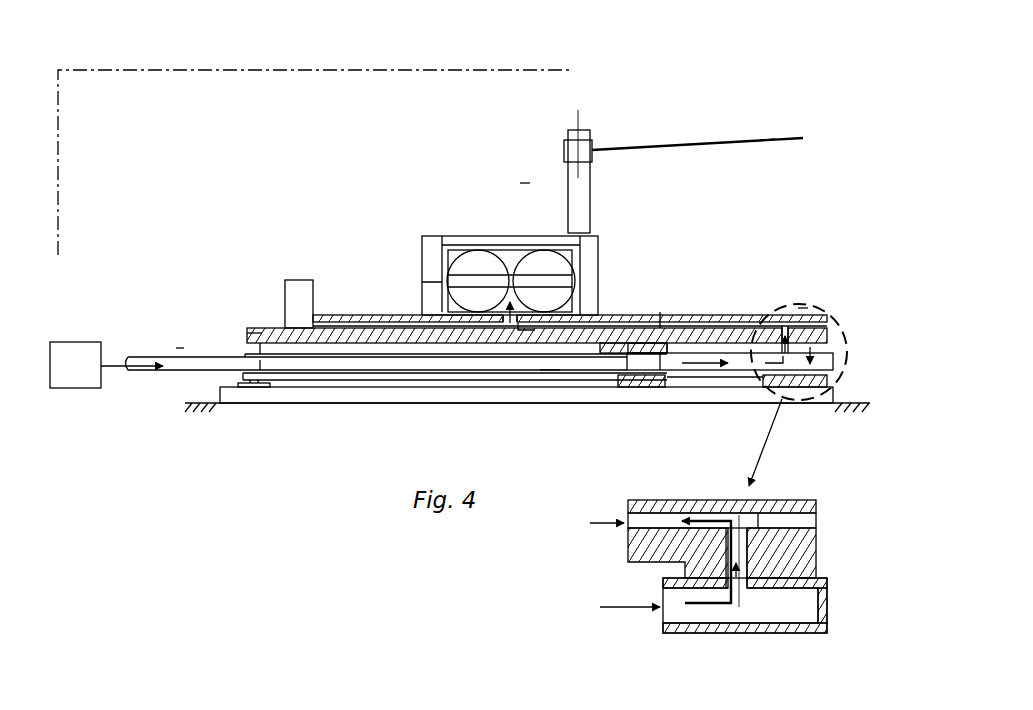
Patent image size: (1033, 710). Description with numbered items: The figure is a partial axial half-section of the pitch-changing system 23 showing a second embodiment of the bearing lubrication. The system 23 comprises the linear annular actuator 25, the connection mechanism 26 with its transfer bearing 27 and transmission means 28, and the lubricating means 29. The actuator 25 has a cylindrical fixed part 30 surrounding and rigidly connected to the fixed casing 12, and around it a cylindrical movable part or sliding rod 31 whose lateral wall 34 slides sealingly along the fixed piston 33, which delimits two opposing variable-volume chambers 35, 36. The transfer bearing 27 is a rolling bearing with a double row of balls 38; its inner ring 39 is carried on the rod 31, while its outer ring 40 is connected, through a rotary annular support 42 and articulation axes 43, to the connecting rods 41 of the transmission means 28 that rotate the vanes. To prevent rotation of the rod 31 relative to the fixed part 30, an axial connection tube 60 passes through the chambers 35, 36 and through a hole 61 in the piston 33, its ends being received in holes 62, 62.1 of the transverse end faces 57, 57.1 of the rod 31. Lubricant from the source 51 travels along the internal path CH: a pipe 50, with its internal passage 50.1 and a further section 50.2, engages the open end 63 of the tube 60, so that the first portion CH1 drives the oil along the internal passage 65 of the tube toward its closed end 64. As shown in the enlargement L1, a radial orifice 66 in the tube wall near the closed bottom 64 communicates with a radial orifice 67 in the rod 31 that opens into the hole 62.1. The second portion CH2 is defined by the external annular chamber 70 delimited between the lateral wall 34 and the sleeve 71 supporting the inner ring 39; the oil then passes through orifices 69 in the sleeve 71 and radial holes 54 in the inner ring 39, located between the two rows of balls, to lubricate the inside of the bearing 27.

The system for changing the pitch 23 is at (241, 67).
The fixed casing 12 is at (190, 416).
The cylindrical fixed part 30 is at (337, 404).
The rotary annular support 42 is at (591, 196).
The articulation axes 43 is at (583, 119).
The connecting rods 41 is at (700, 143).
The transmission means 28 is at (770, 136).
The connection mechanism 26 is at (523, 181).
The transfer bearing 27 is at (444, 233).
The outer ring 40 is at (432, 240).
The balls 38 is at (466, 263).
The inner ring 39 is at (442, 303).
The holes 54 is at (537, 286).
The orifices 69 is at (505, 341).
The cylindrical movable part 31 is at (348, 316).
The transverse end face 57 is at (247, 336).
The actuator 25 is at (271, 324).
The means for lubricating the bearing 29 is at (179, 345).
The lateral wall 34 is at (385, 346).
The piston 33 is at (625, 343).
The hole 61 is at (661, 312).
The lubricant supply source 51 is at (106, 365).
The pipes 50 is at (166, 373).
The open end of the tube 63 is at (211, 377).
The variable-volume chamber 35 is at (420, 381).
The hole 62 is at (253, 388).
The internal passage 50.1 is at (285, 361).
The connection tube 60 is at (535, 372).
The tube second section 50.2 is at (650, 362).
The variable-volume chamber 36 is at (740, 373).
The internal passage 65 is at (695, 377).
The external annular chamber 70 is at (763, 316).
The sleeve 71 is at (718, 316).
The internal path CH is at (803, 307).
The enlargement L1 is at (768, 431).
The transverse end face 57.1 is at (782, 543).
The passage hole 62.1 is at (800, 570).
The closed end 64 is at (827, 616).
The radial orifice 67 is at (752, 506).
The radial orifice 66 is at (745, 610).
The second portion CH2 is at (566, 536).
The first portion CH1 is at (603, 619).